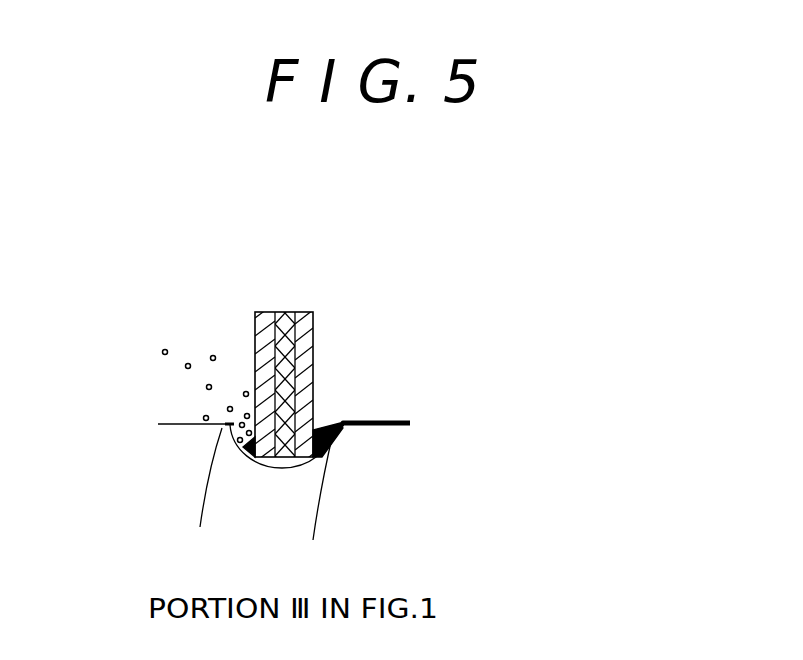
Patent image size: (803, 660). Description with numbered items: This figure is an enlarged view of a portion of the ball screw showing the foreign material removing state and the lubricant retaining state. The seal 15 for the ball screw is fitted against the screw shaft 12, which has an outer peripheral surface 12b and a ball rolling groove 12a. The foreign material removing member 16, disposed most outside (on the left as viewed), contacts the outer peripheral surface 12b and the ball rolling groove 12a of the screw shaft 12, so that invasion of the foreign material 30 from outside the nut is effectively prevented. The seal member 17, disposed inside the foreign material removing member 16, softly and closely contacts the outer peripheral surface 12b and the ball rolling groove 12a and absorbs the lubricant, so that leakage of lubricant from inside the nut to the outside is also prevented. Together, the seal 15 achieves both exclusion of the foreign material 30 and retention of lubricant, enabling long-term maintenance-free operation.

The screw shaft 12 is at (378, 437).
The ball rolling groove 12a is at (178, 420).
The outer peripheral surface 12b is at (247, 458).
The seal 15 is at (279, 306).
The foreign material removing member 16 is at (260, 327).
The seal member 17 is at (295, 368).
The foreign material 30 is at (163, 349).